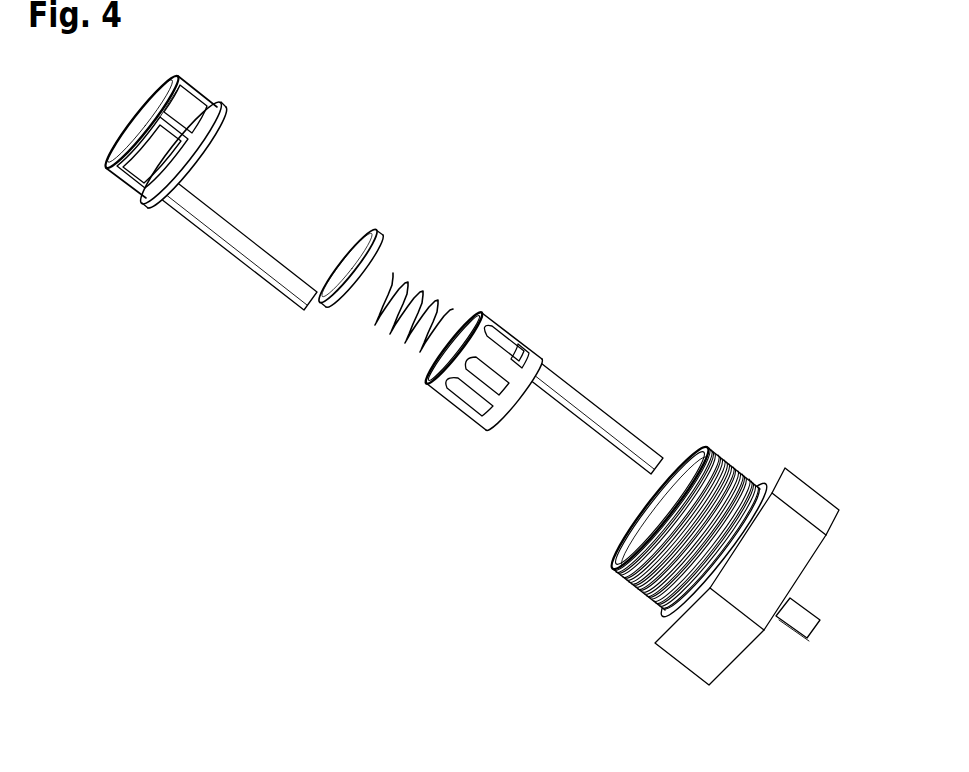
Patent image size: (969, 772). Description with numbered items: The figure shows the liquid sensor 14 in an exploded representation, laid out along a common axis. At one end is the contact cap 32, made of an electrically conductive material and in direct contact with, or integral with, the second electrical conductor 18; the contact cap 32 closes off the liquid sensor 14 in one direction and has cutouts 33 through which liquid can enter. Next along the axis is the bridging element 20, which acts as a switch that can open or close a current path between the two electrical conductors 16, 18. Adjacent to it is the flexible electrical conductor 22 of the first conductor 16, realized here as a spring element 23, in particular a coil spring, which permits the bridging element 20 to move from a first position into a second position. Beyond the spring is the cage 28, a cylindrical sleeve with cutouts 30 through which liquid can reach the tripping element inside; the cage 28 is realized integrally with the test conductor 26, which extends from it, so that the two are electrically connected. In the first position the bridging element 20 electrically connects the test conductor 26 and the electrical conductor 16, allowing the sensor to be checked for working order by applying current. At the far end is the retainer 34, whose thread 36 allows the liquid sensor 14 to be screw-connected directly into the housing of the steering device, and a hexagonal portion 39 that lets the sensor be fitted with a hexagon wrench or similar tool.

The liquid sensor 14 is at (654, 134).
The first electrical conductor 16 is at (812, 617).
The second electrical conductor 18 is at (244, 245).
The bridging element 20 is at (345, 253).
The flexible electrical conductor 22 is at (427, 270).
The spring element 23 is at (420, 283).
The test conductor 26 is at (602, 422).
The cage 28 is at (482, 368).
The cutouts 30 is at (487, 358).
The contact cap 32 is at (118, 143).
The cutouts 33 is at (188, 105).
The retainer 34 is at (696, 496).
The thread 36 is at (725, 462).
The hexagonal portion 39 is at (808, 500).